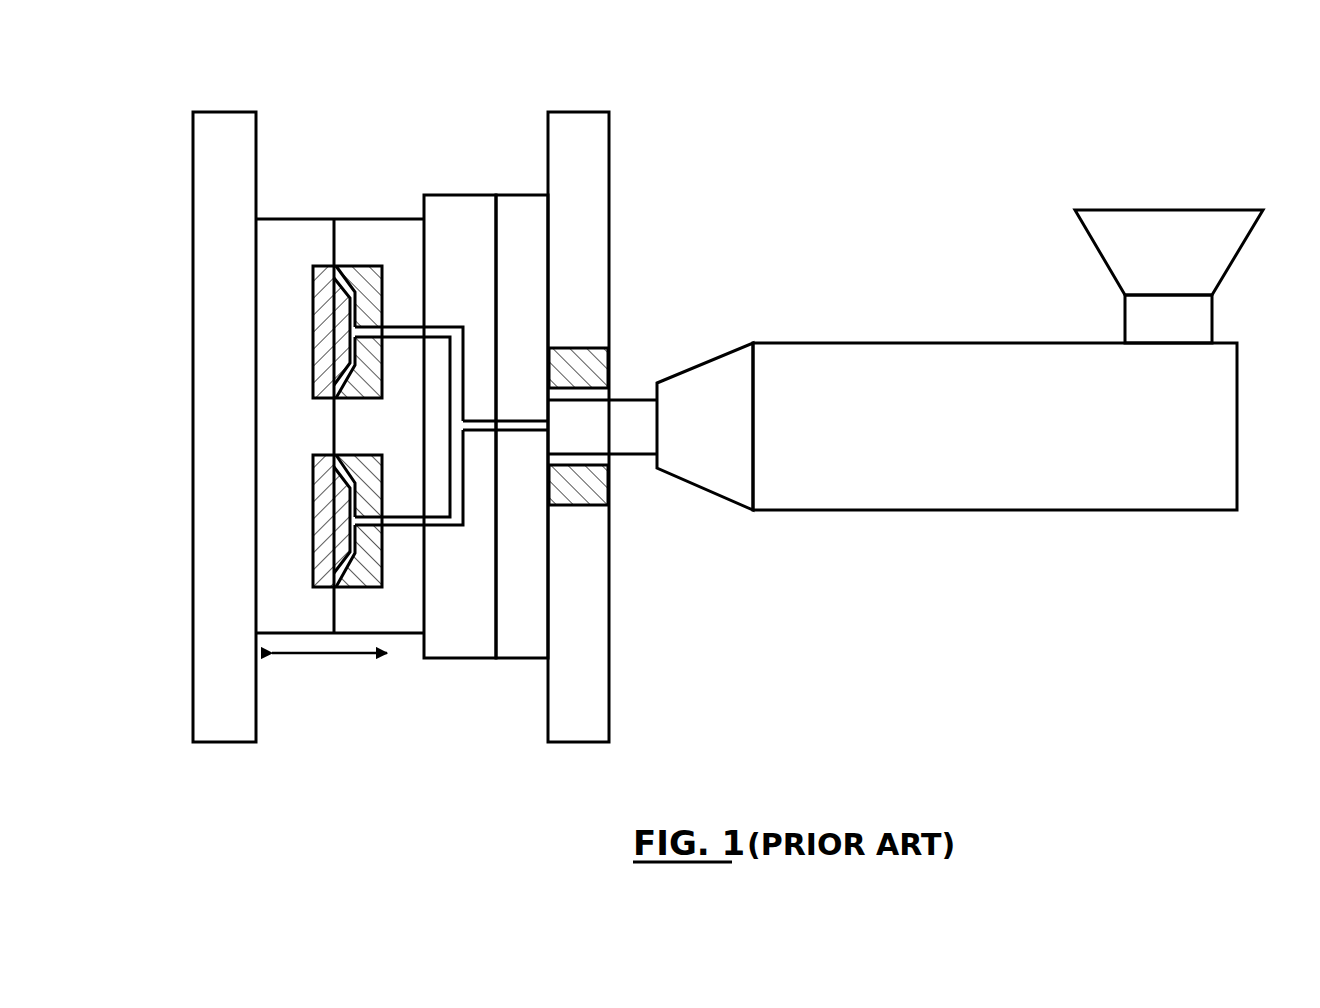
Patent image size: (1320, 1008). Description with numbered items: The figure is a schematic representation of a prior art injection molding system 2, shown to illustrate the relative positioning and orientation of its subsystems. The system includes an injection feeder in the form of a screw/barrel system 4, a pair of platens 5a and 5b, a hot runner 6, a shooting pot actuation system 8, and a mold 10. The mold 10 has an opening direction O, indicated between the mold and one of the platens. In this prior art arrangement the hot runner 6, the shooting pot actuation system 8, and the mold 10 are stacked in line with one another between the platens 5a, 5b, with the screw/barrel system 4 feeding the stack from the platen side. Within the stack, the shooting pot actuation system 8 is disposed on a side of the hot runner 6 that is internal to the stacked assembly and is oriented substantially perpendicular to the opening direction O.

The injection molding system 2 is at (960, 309).
The screw/barrel system 4 is at (868, 363).
The platen 5a is at (597, 175).
The platen 5b is at (218, 185).
The hot runner 6 is at (454, 637).
The shooting pot actuation system 8 is at (518, 212).
The mold 10 is at (343, 186).
The opening direction O is at (329, 679).